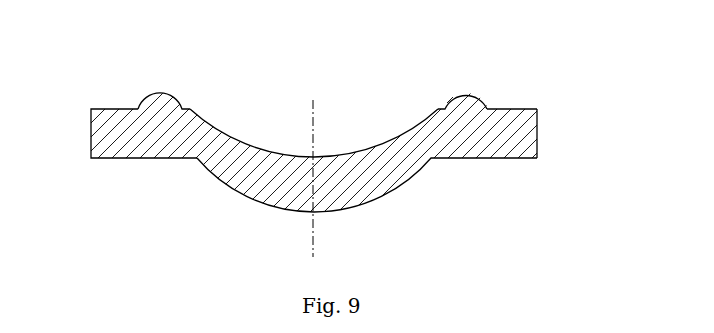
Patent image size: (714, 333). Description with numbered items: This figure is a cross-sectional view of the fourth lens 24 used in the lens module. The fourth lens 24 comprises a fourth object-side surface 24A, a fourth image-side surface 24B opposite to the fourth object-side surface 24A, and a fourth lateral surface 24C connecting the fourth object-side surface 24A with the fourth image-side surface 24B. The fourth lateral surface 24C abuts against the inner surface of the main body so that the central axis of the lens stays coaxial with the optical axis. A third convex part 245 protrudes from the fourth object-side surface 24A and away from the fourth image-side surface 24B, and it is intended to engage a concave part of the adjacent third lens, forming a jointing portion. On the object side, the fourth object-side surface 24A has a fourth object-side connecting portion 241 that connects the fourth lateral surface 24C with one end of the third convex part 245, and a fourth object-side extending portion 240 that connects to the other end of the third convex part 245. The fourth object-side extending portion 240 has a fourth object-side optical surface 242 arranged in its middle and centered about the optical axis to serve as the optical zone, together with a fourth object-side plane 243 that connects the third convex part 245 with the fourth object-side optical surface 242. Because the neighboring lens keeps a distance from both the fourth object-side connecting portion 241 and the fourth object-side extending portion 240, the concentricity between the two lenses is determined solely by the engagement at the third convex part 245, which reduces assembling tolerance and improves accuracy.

The fourth lens 24 is at (319, 31).
The fourth object-side extending portion 240 is at (452, 48).
The fourth object-side connecting portion 241 is at (123, 109).
The fourth object-side optical surface 242 is at (350, 153).
The fourth object-side plane 243 is at (446, 109).
The third convex part 245 is at (163, 93).
The fourth object-side surface 24A is at (514, 91).
The fourth image-side surface 24B is at (513, 174).
The fourth lateral surface 24C is at (537, 134).